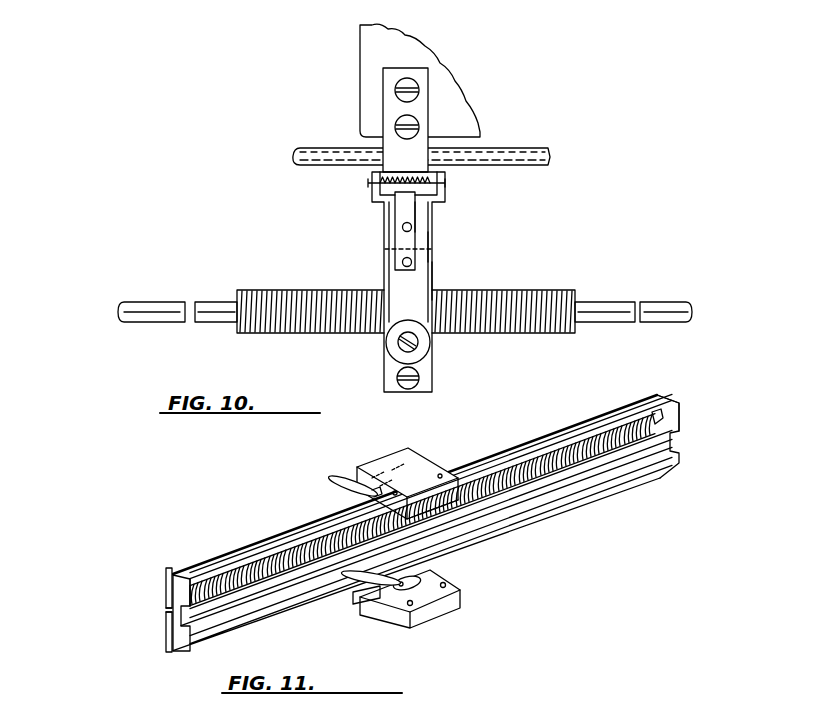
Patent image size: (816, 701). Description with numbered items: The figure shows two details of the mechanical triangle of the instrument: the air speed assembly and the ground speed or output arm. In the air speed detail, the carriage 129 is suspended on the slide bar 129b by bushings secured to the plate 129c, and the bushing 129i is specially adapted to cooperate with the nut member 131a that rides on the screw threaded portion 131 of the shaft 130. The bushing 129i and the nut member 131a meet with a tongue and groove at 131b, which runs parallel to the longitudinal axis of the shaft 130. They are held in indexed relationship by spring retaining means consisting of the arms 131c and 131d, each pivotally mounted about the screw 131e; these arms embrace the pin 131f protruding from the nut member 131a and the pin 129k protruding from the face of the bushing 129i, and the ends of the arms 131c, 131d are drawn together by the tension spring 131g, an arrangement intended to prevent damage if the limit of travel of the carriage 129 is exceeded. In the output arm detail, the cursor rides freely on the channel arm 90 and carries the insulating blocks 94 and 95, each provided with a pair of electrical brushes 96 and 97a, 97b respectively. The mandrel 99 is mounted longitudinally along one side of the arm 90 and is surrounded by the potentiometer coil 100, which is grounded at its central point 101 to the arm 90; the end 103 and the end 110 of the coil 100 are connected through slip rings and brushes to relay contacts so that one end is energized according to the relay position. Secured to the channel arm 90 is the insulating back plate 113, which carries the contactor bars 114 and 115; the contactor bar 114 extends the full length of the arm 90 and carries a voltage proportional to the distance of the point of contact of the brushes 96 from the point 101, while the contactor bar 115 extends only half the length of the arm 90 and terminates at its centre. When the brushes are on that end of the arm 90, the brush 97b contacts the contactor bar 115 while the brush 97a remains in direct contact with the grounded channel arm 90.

In FIG. 10, the carriage 129 is at (478, 99).
In FIG. 10, the slide bar 129b is at (553, 158).
In FIG. 10, the plate 129c is at (437, 68).
In FIG. 10, the bushing 129i is at (390, 108).
In FIG. 10, the pin 129k is at (402, 227).
In FIG. 10, the shaft 130 is at (207, 306).
In FIG. 10, the screw threaded portion 131 is at (338, 322).
In FIG. 10, the nut member 131a is at (432, 277).
In FIG. 10, the tongue and groove 131b is at (430, 243).
In FIG. 10, the arm 131c is at (398, 242).
In FIG. 10, the arm 131d is at (418, 224).
In FIG. 10, the screw 131e is at (416, 346).
In FIG. 10, the pin 131f is at (402, 262).
In FIG. 10, the tension spring 131g is at (393, 173).
In FIG. 11, the channel arm 90 is at (197, 625).
In FIG. 11, the insulating block 94 is at (405, 461).
In FIG. 11, the insulating block 95 is at (448, 613).
In FIG. 11, the electrical brushes 96 is at (357, 498).
In FIG. 11, the brush 97a is at (393, 594).
In FIG. 11, the brush 97b is at (347, 596).
In FIG. 11, the mandrel 99 is at (662, 405).
In FIG. 11, the potentiometer coil 100 is at (250, 563).
In FIG. 11, the central point 101 is at (446, 528).
In FIG. 11, the end of potentiometer coil 103 is at (195, 580).
In FIG. 11, the end of potentiometer coil 110 is at (653, 407).
In FIG. 11, the back plate 113 is at (168, 612).
In FIG. 11, the contactor bar 114 is at (172, 573).
In FIG. 11, the contactor bar 115 is at (167, 642).